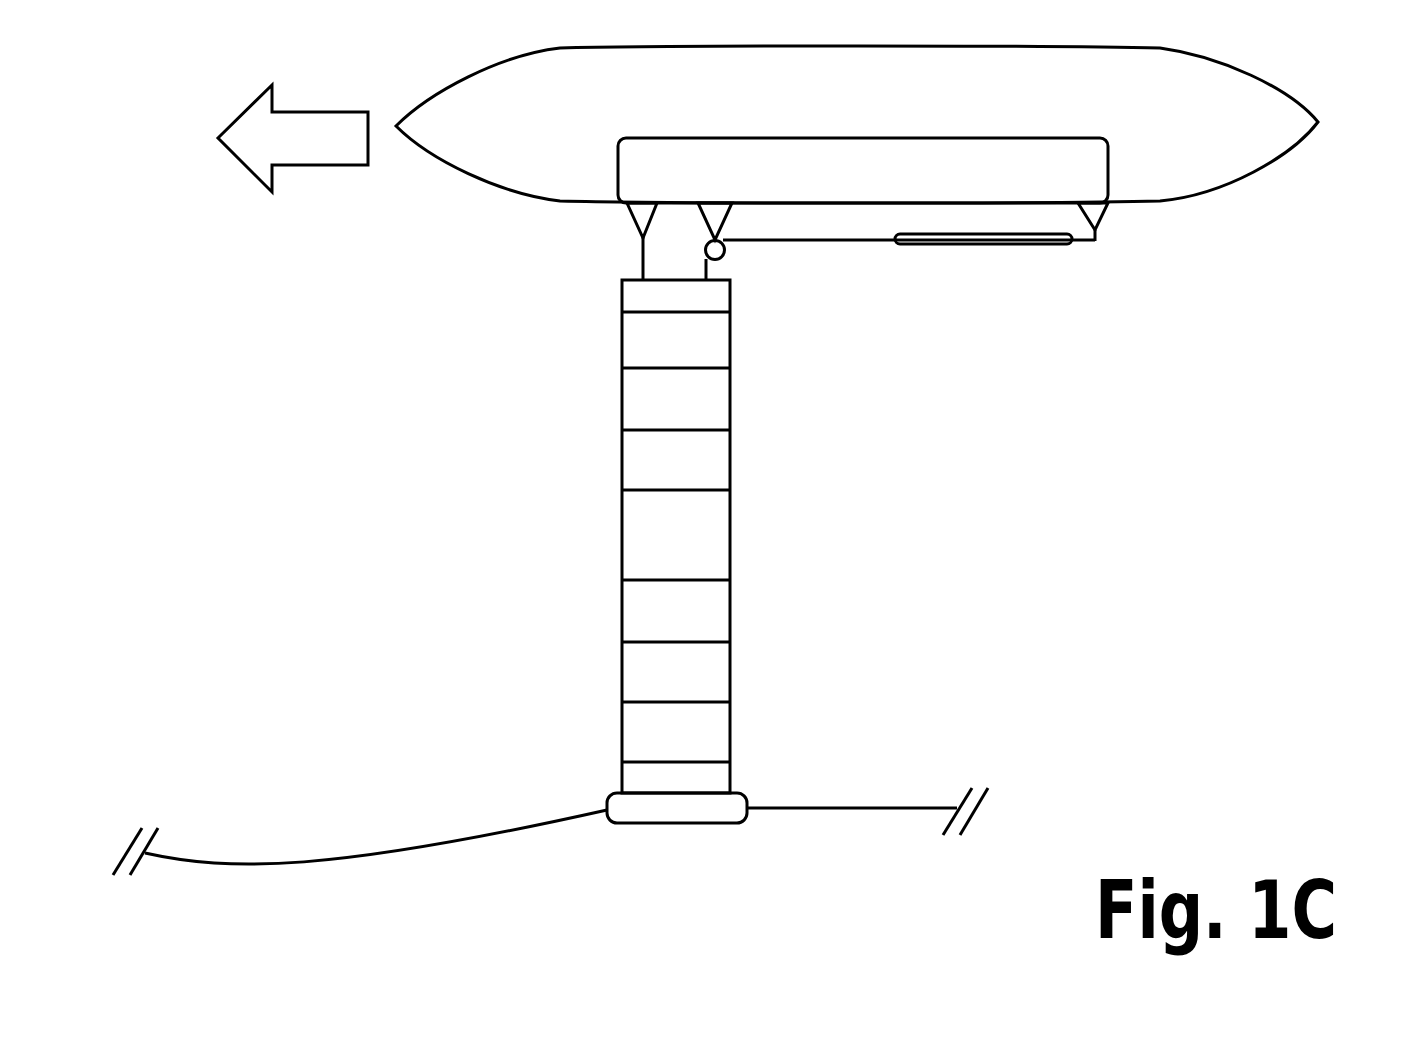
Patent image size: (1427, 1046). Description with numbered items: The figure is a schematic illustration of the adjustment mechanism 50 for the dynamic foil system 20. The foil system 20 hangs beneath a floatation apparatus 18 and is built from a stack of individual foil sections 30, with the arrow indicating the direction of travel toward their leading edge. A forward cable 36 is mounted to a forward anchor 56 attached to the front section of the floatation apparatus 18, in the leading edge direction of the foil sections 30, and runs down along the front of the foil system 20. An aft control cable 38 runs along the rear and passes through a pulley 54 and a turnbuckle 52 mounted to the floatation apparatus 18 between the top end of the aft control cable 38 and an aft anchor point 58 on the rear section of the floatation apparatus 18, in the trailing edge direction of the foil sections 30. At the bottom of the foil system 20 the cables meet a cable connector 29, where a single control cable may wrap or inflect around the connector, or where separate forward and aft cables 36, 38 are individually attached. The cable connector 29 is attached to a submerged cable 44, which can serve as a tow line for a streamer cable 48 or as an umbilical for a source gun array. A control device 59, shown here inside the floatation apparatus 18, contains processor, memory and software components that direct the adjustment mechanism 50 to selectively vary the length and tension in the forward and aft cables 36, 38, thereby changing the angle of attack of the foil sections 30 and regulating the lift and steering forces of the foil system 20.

The floatation apparatus 18 is at (1317, 140).
The control device 59 is at (894, 191).
The forward anchor 56 is at (633, 224).
The forward cable 36 is at (638, 254).
The pulley 54 is at (727, 255).
The aft control cable 38 is at (850, 246).
The turnbuckle 52 is at (1007, 247).
The aft anchor point 58 is at (1103, 222).
The dynamic foil system 20 is at (664, 536).
The foil sections 30 is at (622, 400).
The cable connector 29 is at (662, 825).
The streamer cable 48 is at (853, 805).
The submerged cable 44 is at (412, 858).
The adjustment mechanism 50 is at (1127, 492).